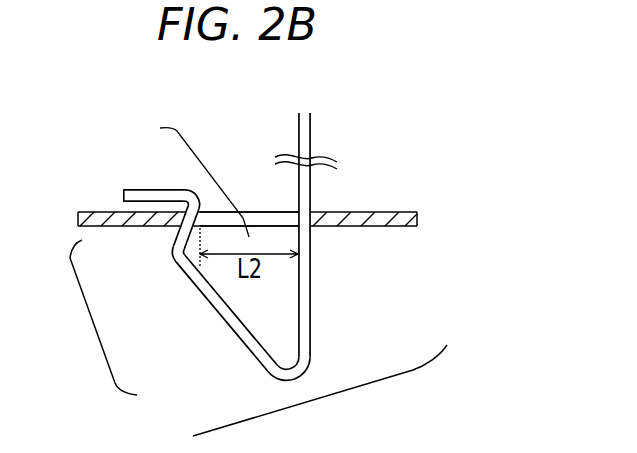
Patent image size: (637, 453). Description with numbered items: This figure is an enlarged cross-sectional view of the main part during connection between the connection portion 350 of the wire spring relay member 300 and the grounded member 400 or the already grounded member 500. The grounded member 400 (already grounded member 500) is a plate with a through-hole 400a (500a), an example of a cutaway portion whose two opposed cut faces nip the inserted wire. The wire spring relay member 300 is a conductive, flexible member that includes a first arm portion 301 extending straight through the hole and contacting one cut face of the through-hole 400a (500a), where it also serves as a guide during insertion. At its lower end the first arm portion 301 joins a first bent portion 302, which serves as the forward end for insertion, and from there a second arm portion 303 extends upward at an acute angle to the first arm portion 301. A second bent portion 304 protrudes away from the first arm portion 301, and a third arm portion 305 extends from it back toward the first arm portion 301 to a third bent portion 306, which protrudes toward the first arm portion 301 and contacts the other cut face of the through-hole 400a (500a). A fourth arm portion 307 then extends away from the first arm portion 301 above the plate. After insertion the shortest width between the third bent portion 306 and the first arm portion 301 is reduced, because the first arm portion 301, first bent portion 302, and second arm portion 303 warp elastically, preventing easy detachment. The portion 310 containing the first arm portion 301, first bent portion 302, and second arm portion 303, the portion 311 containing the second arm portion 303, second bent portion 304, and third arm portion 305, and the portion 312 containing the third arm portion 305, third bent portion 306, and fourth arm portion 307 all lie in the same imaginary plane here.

The wire spring relay member 300 is at (278, 228).
The first arm portion 301 is at (313, 277).
The first bent portion 302 is at (300, 378).
The second arm portion 303 is at (221, 334).
The second bent portion 304 is at (170, 267).
The third arm portion 305 is at (178, 243).
The third bent portion 306 is at (196, 190).
The fourth arm portion 307 is at (134, 190).
The portion 310 is at (310, 403).
The portion 311 is at (94, 324).
The portion 312 is at (212, 176).
The connection portion 350 is at (456, 331).
The grounded member 400 is at (279, 186).
The already grounded member 500 is at (372, 213).
The through-hole 400a is at (236, 145).
The through-hole 500a is at (273, 213).